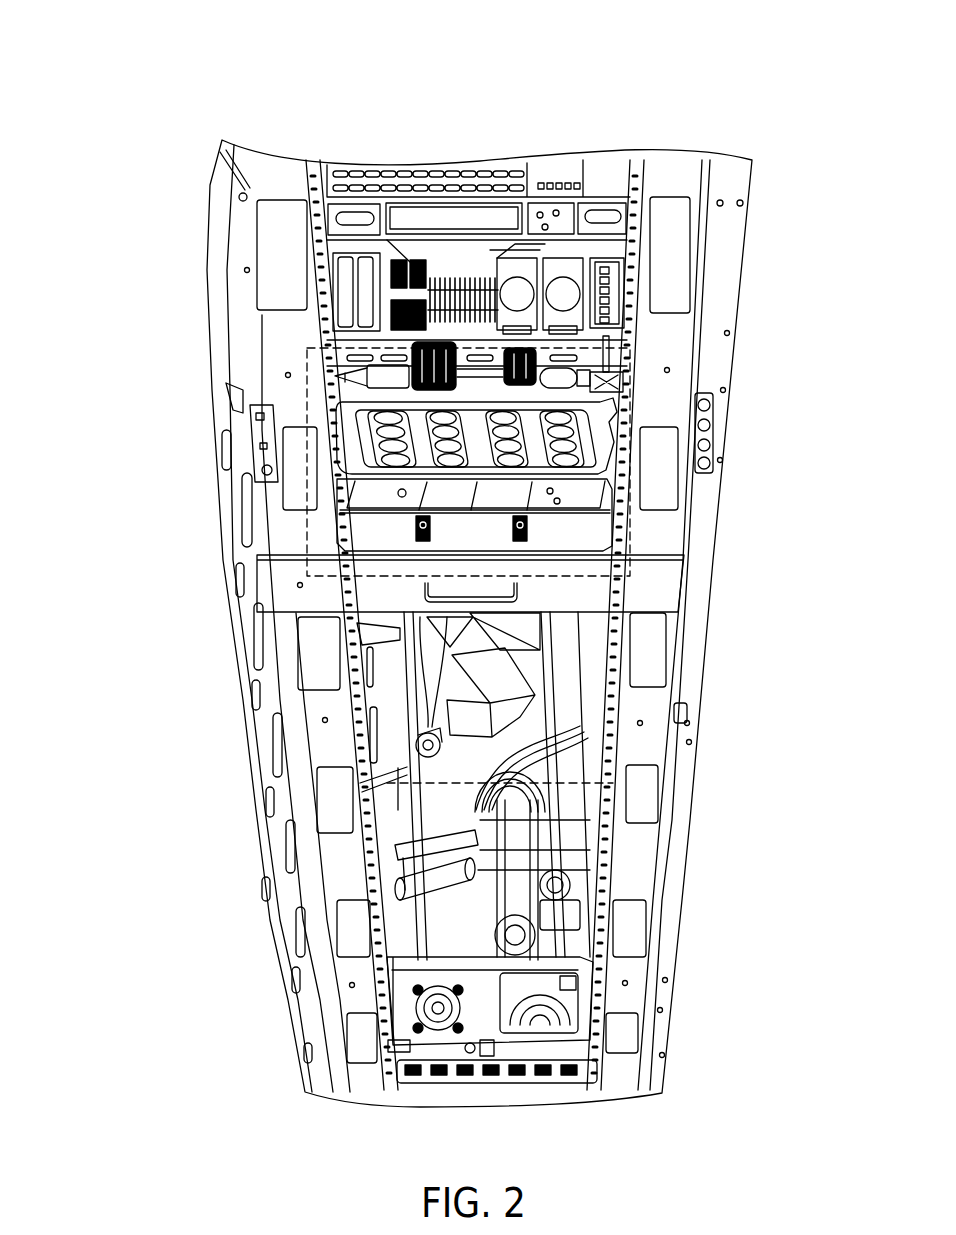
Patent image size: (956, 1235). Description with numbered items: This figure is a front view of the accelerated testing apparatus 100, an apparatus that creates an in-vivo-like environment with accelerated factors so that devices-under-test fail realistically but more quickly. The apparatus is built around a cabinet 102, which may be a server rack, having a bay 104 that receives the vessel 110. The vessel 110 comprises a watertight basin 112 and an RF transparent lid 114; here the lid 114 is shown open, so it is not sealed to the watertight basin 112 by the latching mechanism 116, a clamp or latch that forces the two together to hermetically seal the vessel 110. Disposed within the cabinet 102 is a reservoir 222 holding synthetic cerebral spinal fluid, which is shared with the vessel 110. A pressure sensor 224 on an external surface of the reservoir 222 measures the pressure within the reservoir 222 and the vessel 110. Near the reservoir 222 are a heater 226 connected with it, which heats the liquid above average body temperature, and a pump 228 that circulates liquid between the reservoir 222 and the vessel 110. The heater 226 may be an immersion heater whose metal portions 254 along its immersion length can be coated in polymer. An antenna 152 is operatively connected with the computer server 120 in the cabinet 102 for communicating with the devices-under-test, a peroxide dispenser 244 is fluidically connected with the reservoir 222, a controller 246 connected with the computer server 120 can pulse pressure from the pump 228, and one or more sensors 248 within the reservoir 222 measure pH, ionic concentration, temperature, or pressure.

The accelerated testing apparatus 100 is at (150, 93).
The cabinet 102 is at (735, 272).
The bay 104 is at (610, 417).
The vessel 110 is at (313, 403).
The watertight basin 112 is at (333, 533).
The RF transparent lid 114 is at (327, 450).
The latching mechanism 116 is at (327, 383).
The computer server 120 is at (503, 157).
The antenna 152 is at (535, 192).
The reservoir 222 is at (413, 943).
The pressure sensor 224 is at (413, 1007).
The heater 226 is at (583, 927).
The pump 228 is at (578, 883).
The peroxide dispenser 244 is at (587, 810).
The controller 246 is at (613, 263).
The sensors 248 is at (440, 887).
The metal portions 254 is at (425, 857).